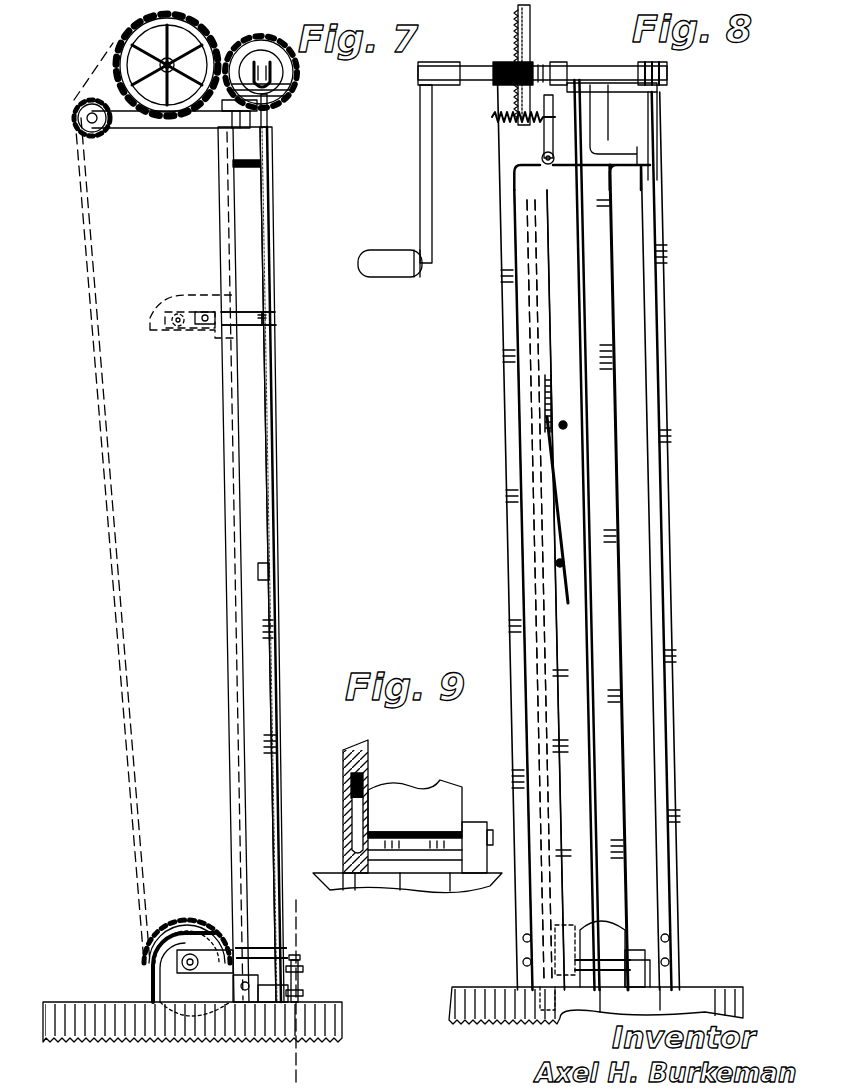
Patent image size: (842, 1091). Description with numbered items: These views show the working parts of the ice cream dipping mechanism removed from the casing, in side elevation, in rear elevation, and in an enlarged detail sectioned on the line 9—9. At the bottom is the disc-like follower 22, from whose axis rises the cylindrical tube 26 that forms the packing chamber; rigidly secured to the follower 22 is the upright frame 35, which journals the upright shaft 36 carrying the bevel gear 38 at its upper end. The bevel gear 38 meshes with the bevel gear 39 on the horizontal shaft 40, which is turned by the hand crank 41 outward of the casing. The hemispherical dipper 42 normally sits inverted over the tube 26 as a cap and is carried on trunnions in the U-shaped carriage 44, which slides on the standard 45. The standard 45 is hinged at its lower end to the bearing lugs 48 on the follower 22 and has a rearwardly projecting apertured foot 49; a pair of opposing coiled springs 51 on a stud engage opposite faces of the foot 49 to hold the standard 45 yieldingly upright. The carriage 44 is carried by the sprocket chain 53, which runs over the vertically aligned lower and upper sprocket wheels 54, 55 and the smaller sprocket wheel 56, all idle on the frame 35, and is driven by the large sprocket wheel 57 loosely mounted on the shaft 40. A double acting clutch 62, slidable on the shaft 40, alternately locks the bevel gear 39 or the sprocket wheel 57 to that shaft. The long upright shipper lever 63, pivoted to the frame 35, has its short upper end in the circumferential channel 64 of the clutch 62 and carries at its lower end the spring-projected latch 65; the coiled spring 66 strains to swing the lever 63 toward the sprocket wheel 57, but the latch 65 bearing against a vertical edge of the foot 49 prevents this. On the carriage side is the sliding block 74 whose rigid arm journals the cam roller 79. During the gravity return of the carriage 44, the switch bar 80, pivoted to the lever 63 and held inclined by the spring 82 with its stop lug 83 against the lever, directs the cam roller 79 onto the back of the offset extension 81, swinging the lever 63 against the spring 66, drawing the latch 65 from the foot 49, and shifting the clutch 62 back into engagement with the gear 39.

In FIG. 7, the section line 9— 9 is at (305, 992).
In FIG. 7, the follower 22 is at (322, 1002).
In FIG. 8, the follower 22 is at (712, 987).
In FIG. 9, the follower 22 is at (432, 893).
In FIG. 7, the cylindrical tube 26 is at (180, 1012).
In FIG. 7, the upright frame 35 is at (270, 133).
In FIG. 8, the upright frame 35 is at (610, 128).
In FIG. 8, the upright shaft 36 is at (588, 307).
In FIG. 7, the bevel gear 38 is at (292, 94).
In FIG. 8, the bevel gear 38 is at (660, 88).
In FIG. 7, the bevel gear 39 is at (295, 74).
In FIG. 8, the bevel gear 39 is at (576, 78).
In FIG. 8, the horizontal shaft 40 is at (472, 70).
In FIG. 8, the hand crank 41 is at (420, 184).
In FIG. 7, the dipper 42 is at (155, 294).
In FIG. 7, the carriage 44 is at (190, 340).
In FIG. 8, the standard 45 is at (614, 347).
In FIG. 9, the standard 45 is at (430, 798).
In FIG. 7, the bearing lugs 48 is at (236, 1002).
In FIG. 8, the bearing lugs 48 is at (650, 962).
In FIG. 9, the bearing lugs 48 is at (478, 830).
In FIG. 7, the foot 49 is at (246, 1004).
In FIG. 8, the foot 49 is at (668, 912).
In FIG. 7, the coiled springs 51 is at (302, 968).
In FIG. 7, the sprocket chain 53 is at (103, 246).
In FIG. 8, the sprocket chain 53 is at (540, 884).
In FIG. 7, the lower sprocket wheel 54 is at (180, 925).
In FIG. 8, the lower sprocket wheel 54 is at (540, 932).
In FIG. 7, the upper sprocket wheel 55 is at (163, 98).
In FIG. 7, the smaller sprocket wheel 56 is at (100, 136).
In FIG. 7, the large sprocket wheel 57 is at (218, 103).
In FIG. 8, the large sprocket wheel 57 is at (520, 96).
In FIG. 8, the double acting clutch 62 is at (540, 70).
In FIG. 8, the shipper lever 63 is at (552, 296).
In FIG. 8, the circumferential channel 64 is at (568, 70).
In FIG. 7, the latch 65 is at (276, 1004).
In FIG. 8, the latch 65 is at (558, 1020).
In FIG. 9, the latch 65 is at (352, 840).
In FIG. 8, the coiled spring 66 is at (518, 132).
In FIG. 7, the block 74 is at (255, 295).
In FIG. 7, the cam roller 79 is at (268, 328).
In FIG. 7, the switch bar 80 is at (262, 499).
In FIG. 8, the switch bar 80 is at (547, 418).
In FIG. 7, the offset extension 81 is at (256, 709).
In FIG. 8, the offset extension 81 is at (552, 722).
In FIG. 9, the offset extension 81 is at (343, 764).
In FIG. 8, the spring 82 is at (565, 563).
In FIG. 8, the stop lug 83 is at (567, 425).